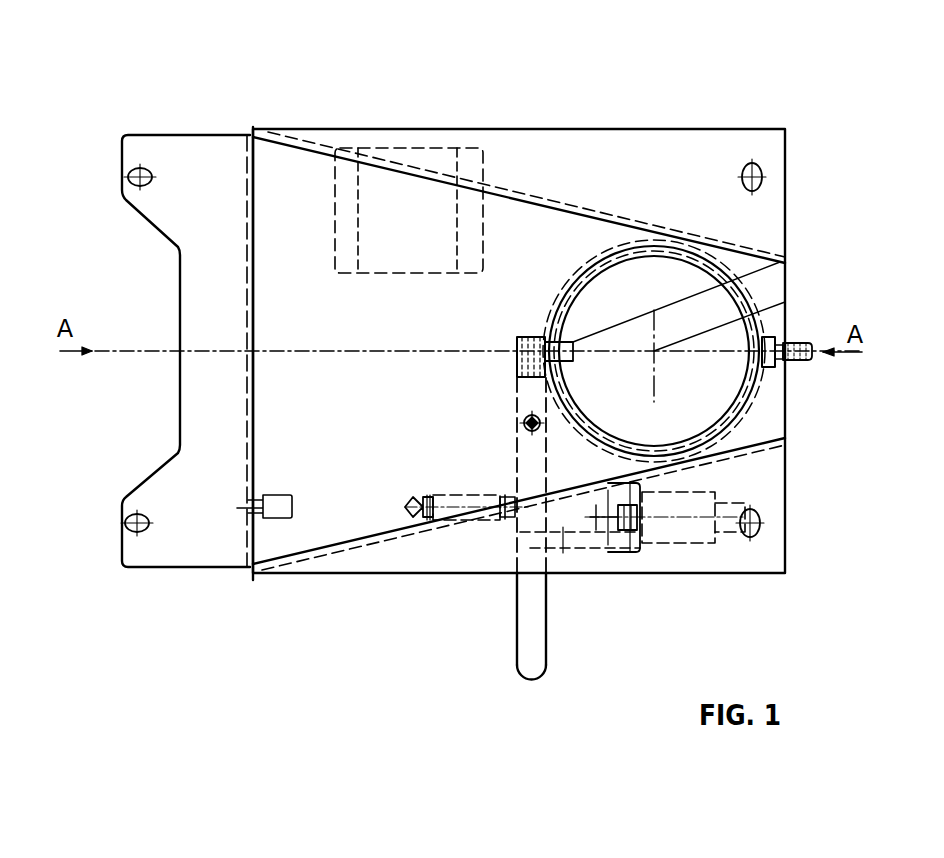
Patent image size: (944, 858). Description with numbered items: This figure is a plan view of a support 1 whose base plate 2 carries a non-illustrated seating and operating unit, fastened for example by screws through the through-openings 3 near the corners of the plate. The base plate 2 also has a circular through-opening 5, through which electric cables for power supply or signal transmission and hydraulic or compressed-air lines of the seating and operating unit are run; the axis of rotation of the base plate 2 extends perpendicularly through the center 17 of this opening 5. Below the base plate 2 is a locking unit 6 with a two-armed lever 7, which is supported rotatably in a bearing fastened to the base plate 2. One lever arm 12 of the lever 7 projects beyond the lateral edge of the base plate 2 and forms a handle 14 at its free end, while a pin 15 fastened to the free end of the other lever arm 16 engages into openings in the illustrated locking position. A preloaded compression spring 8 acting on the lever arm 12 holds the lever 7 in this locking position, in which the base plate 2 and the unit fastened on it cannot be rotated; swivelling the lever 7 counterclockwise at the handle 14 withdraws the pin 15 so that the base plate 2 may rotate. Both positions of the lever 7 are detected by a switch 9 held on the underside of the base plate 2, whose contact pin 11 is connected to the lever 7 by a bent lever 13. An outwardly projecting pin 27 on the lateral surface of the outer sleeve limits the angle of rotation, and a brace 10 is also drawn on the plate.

The support 1 is at (515, 120).
The base plate 2 is at (607, 150).
The through-openings 3 is at (150, 168).
The circular through-opening 5 is at (708, 400).
The locking unit 6 is at (517, 344).
The two-armed lever 7 is at (510, 640).
The compression spring 8 is at (445, 515).
The switch 9 is at (665, 532).
The brace 10 is at (668, 461).
The contact pin 11 is at (592, 522).
The lever arm 12 is at (543, 613).
The bent lever 13 is at (562, 523).
The handle 14 is at (535, 655).
The pin 15 is at (782, 261).
The lever arm 16 is at (517, 385).
The center 17 is at (788, 302).
The pin 27 is at (813, 358).